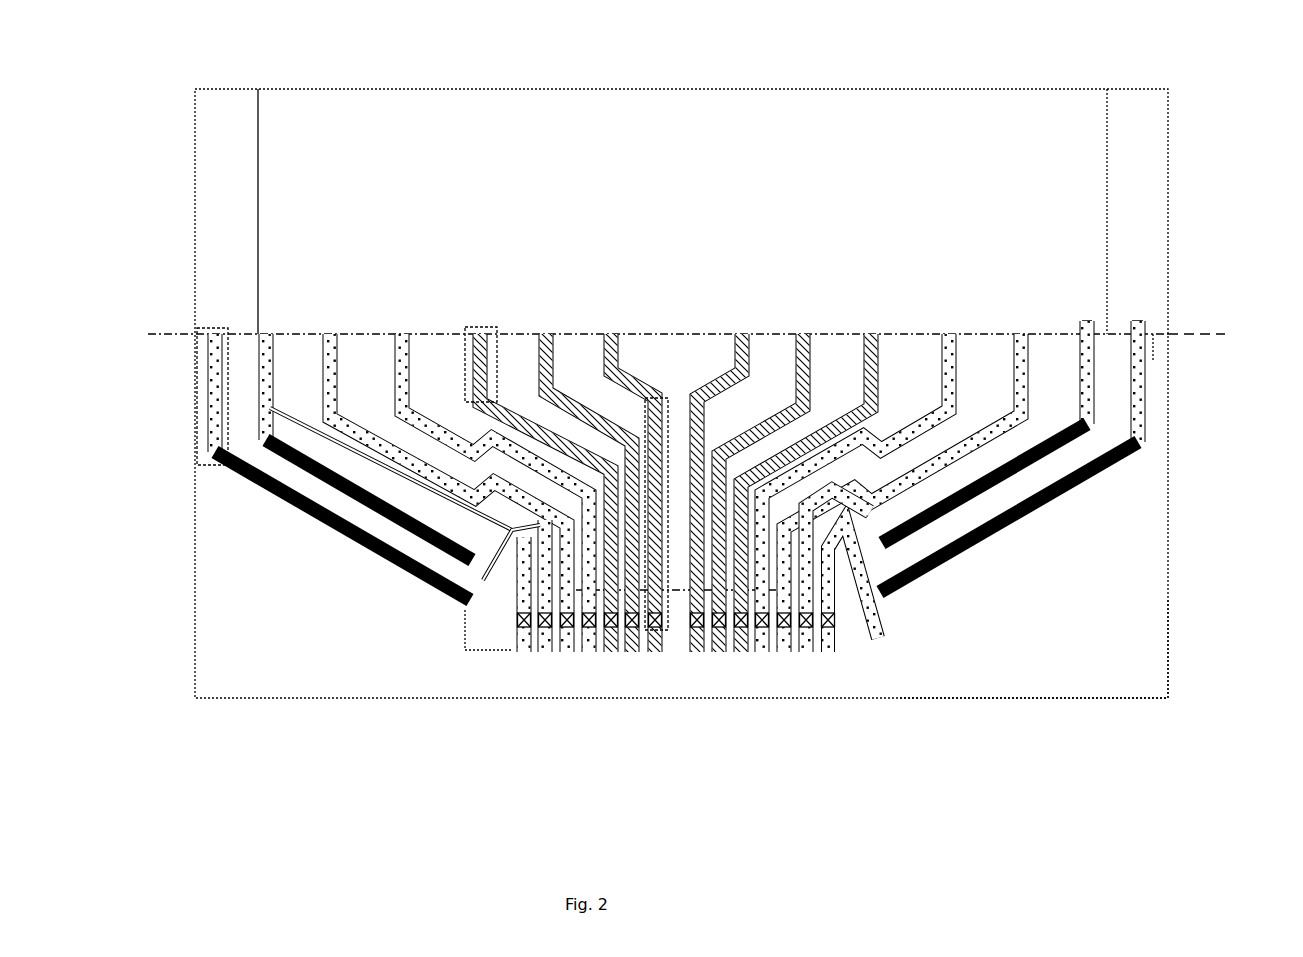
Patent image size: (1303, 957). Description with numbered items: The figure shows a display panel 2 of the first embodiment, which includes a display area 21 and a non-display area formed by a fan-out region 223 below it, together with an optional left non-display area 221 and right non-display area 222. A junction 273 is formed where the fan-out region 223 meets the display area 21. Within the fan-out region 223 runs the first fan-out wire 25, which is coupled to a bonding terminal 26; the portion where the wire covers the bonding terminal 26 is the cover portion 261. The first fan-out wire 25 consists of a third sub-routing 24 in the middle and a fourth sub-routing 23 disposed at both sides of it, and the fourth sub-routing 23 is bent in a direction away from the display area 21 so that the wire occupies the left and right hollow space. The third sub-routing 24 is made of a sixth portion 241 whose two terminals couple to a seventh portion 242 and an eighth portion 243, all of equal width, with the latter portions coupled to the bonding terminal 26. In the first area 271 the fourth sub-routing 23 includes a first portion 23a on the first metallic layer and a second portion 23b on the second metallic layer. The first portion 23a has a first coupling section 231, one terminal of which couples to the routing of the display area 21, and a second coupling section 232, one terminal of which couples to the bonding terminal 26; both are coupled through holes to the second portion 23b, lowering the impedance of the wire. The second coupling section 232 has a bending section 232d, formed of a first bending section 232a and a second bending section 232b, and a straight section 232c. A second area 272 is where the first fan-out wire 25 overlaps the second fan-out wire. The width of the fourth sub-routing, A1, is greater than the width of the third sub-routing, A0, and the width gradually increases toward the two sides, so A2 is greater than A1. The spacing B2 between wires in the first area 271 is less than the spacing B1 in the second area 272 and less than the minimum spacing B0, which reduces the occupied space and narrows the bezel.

The display panel 2 is at (242, 23).
The display area 21 is at (377, 147).
The left non-display area 221 is at (225, 176).
The right non-display area 222 is at (1130, 187).
The fan-out region 223 is at (797, 866).
The fourth sub-routing 23 is at (335, 796).
The first portion 23a is at (210, 430).
The second portion 23b is at (257, 481).
The first coupling section 231 is at (197, 466).
The second coupling section 232 is at (425, 796).
The first bending section 232a is at (512, 652).
The second bending section 232b is at (858, 655).
The straight section 232c is at (837, 655).
The bending section 232d is at (250, 796).
The third sub-routing 24 is at (620, 866).
The sixth portion 241 is at (626, 440).
The seventh portion 242 is at (662, 630).
The eighth portion 243 is at (465, 404).
The first fan-out wire 25 is at (703, 792).
The bonding terminal 26 is at (578, 660).
The cover portion 261 is at (558, 652).
The first area 271 is at (1142, 690).
The second area 272 is at (1153, 362).
The junction 273 is at (1213, 333).
The width of the third sub-routing A0 is at (808, 446).
The width of the fourth sub-routing A1 is at (921, 420).
The width of the first fan-out wire in the second area A2 is at (936, 457).
The minimum distance between first fan-out wires in the second area B0 is at (594, 424).
The distance between fan-out wires in the second area B1 is at (949, 426).
The distance between first fan-out wires in the first area B2 is at (942, 490).